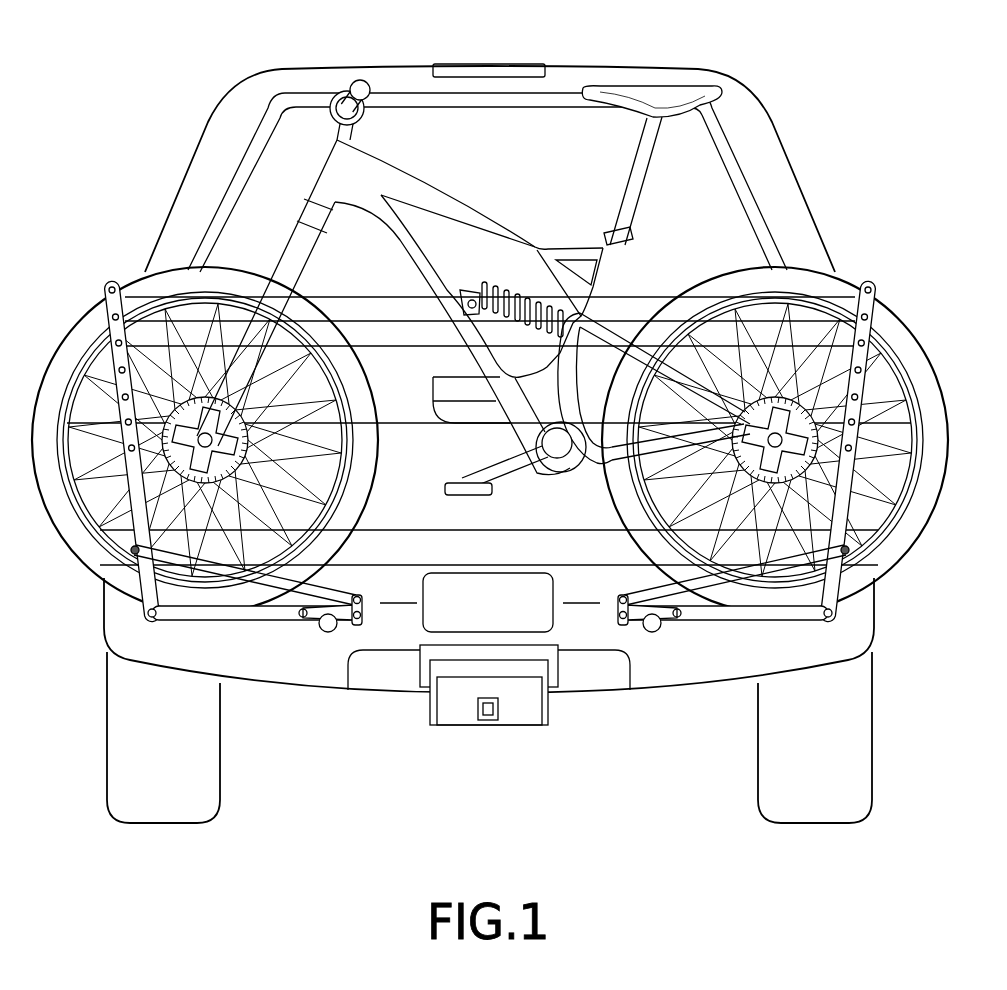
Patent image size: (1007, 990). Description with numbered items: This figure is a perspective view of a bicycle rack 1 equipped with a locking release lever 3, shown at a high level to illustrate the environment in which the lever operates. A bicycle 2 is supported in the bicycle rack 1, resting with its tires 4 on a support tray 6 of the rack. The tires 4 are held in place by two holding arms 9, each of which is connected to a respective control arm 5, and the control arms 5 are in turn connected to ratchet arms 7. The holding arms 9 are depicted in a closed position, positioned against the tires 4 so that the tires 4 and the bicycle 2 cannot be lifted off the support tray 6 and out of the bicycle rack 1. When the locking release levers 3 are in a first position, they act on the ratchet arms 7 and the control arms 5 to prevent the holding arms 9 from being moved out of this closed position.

The bicycle rack 1 is at (705, 675).
The bicycle 2 is at (490, 307).
The locking release lever 3 is at (343, 620).
The tires 4 is at (163, 287).
The control arms 5 is at (195, 563).
The support tray 6 is at (388, 620).
The ratchet arms 7 is at (227, 612).
The holding arms 9 is at (113, 332).